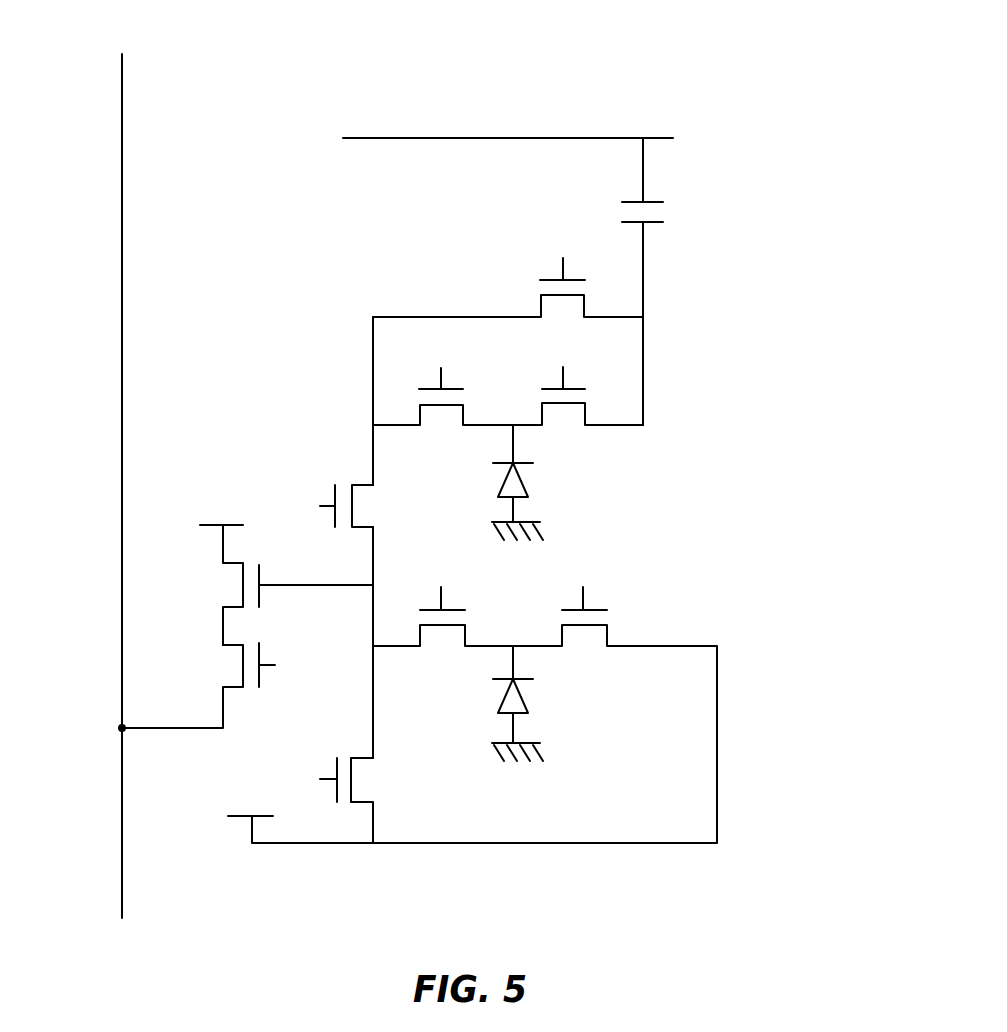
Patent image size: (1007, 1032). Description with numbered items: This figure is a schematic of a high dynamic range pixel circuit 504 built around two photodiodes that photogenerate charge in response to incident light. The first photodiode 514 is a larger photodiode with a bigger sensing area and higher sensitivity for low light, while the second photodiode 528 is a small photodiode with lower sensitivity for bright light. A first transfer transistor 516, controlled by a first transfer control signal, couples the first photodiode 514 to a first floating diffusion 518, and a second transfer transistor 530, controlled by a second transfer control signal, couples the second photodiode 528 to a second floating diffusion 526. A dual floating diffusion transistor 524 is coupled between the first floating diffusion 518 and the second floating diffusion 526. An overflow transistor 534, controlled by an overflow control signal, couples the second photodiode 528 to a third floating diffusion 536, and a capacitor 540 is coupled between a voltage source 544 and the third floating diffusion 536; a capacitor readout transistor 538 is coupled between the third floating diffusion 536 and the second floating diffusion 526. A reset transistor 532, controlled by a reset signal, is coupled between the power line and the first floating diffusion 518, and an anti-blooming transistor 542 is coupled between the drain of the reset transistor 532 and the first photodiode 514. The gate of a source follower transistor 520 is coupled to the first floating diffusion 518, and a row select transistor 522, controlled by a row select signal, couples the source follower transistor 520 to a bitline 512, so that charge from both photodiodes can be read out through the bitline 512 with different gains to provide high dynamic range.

The pixel circuit 504 is at (656, 50).
The bitline 512 is at (123, 866).
The first photodiode 514 is at (506, 694).
The first transfer transistor 516 is at (453, 648).
The first floating diffusion 518 is at (358, 618).
The source follower transistor 520 is at (251, 577).
The row select transistor 522 is at (230, 688).
The dual floating diffusion transistor 524 is at (363, 483).
The second floating diffusion 526 is at (344, 333).
The second photodiode 528 is at (529, 485).
The second transfer transistor 530 is at (444, 417).
The reset transistor 532 is at (332, 771).
The overflow transistor 534 is at (561, 419).
The third floating diffusion 536 is at (665, 393).
The capacitor readout transistor 538 is at (540, 308).
The capacitor 540 is at (650, 201).
The anti-blooming transistor 542 is at (582, 645).
The voltage source 544 is at (543, 115).